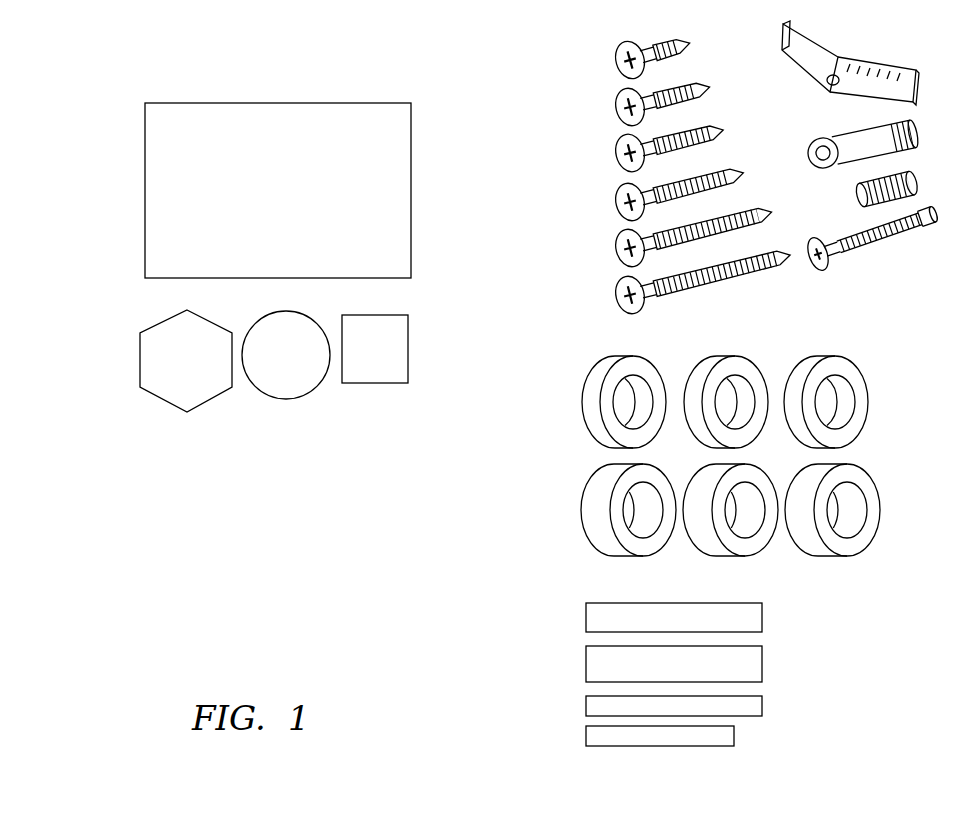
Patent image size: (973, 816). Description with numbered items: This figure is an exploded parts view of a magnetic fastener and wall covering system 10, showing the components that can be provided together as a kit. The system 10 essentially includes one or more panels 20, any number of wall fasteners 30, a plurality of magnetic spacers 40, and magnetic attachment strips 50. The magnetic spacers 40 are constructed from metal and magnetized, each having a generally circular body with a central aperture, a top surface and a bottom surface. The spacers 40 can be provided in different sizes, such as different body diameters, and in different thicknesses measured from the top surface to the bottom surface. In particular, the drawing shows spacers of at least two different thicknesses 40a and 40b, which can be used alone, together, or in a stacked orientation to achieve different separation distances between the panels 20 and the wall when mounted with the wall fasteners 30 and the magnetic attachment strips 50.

The system 10 is at (101, 102).
The panels 20 is at (424, 427).
The wall fasteners 30 is at (597, 34).
The magnetic spacers 40 is at (572, 352).
The spacer of first thickness 40a is at (868, 398).
The spacer of second thickness 40b is at (880, 507).
The magnetic attachment strips 50 is at (572, 598).